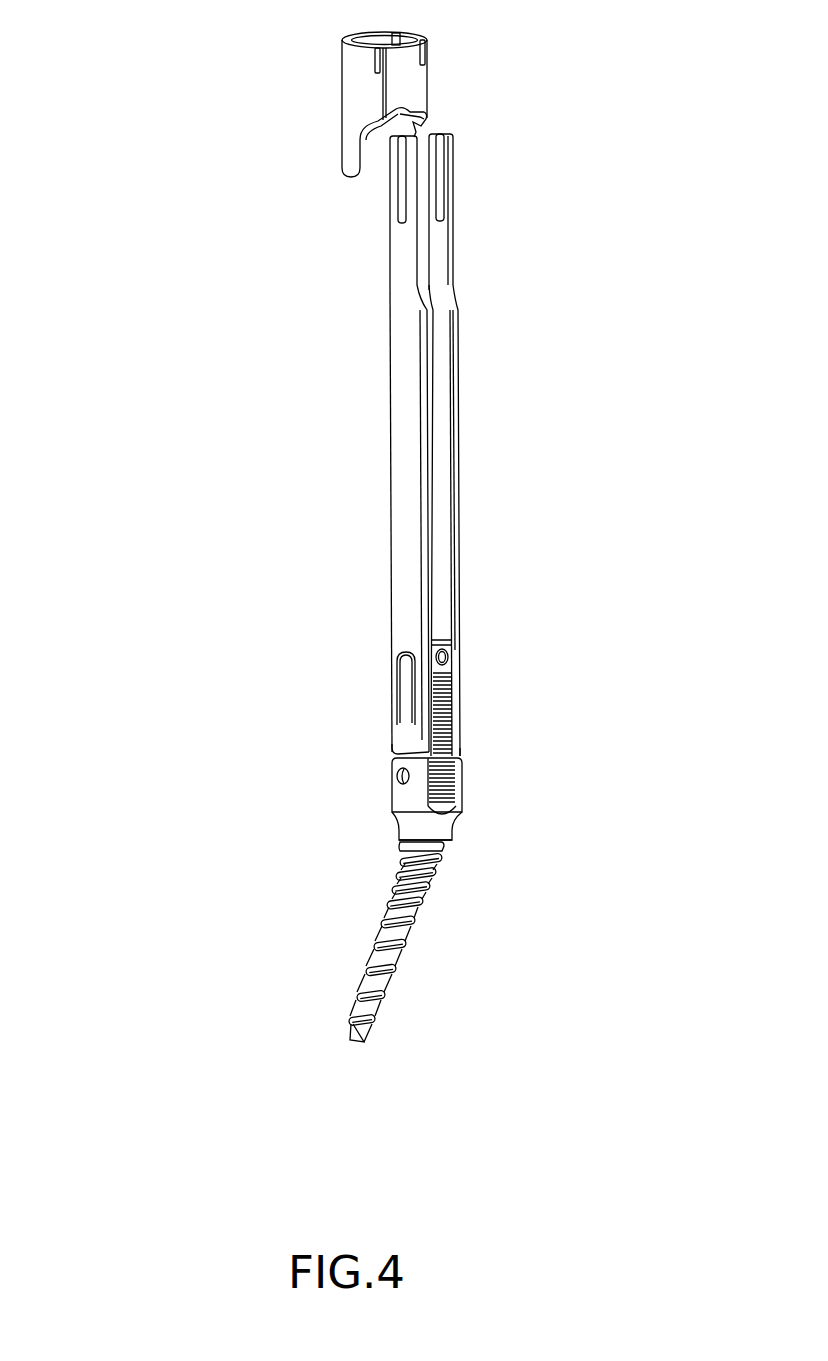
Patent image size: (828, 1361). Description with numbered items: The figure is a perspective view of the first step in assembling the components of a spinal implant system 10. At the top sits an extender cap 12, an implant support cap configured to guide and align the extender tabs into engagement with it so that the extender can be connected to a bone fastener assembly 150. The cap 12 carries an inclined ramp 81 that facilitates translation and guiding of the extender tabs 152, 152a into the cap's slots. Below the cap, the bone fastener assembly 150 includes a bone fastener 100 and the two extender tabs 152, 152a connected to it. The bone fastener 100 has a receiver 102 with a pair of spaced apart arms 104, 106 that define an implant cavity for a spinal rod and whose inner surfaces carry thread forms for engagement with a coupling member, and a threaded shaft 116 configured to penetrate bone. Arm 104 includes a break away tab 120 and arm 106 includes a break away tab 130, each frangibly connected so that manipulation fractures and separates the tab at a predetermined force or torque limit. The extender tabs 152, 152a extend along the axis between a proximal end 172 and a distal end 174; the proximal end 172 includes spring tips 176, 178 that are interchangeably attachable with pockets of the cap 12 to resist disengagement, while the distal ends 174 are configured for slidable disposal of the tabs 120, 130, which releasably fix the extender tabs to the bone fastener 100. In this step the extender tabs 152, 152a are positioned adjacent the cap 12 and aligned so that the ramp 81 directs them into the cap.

The spinal implant system 10 is at (66, 142).
The extender cap 12 is at (295, 75).
The ramp 81 is at (362, 132).
The bone fastener 100 is at (346, 882).
The receiver 102 is at (405, 798).
The arm 104 is at (396, 780).
The arm 106 is at (453, 788).
The threaded shaft 116 is at (408, 946).
The break away tab 120 is at (435, 723).
The break away tab 130 is at (440, 712).
The bone fastener assembly 150 is at (590, 782).
The extender tab 152 is at (405, 533).
The extender tab 152a is at (447, 530).
The proximal end 172 is at (330, 184).
The distal end 174 is at (400, 752).
The spring tip 176 is at (396, 141).
The spring tip 178 is at (403, 152).